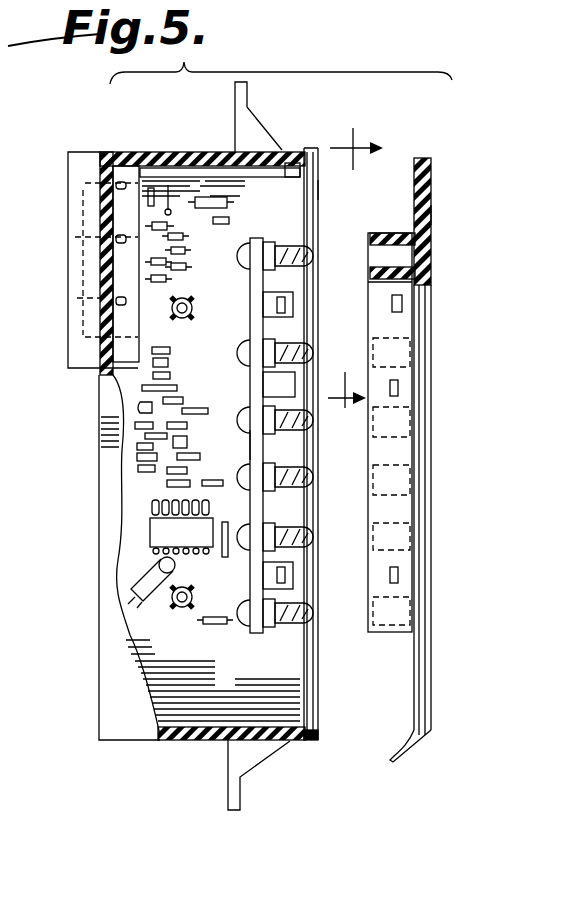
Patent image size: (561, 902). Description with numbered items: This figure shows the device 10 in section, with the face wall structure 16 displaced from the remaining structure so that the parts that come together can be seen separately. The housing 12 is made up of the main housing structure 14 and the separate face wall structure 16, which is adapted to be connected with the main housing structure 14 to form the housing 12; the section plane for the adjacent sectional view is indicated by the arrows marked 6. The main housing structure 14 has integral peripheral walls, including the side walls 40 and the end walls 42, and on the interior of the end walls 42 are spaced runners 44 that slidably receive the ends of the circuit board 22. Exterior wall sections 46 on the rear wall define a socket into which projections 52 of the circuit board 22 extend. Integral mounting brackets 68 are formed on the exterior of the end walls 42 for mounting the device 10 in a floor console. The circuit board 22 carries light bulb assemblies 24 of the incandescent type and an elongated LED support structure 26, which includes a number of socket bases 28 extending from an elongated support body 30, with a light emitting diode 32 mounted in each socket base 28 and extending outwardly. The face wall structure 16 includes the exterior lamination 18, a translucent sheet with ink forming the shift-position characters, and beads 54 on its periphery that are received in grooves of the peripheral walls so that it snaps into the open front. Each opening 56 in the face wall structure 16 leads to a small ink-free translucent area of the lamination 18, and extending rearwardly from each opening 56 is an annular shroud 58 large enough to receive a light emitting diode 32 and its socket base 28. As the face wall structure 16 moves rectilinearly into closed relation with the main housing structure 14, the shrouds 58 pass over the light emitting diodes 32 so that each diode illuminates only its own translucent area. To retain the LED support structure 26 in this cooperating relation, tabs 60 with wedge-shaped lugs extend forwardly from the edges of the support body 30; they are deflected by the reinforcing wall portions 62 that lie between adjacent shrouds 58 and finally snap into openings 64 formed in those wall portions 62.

The section line 6- 6 is at (355, 277).
The device 10 is at (362, 106).
The housing 12 is at (155, 754).
The main housing structure 14 is at (183, 151).
The face wall structure 16 is at (444, 164).
The exterior lamination 18 is at (318, 192).
The circuit board 22 is at (322, 692).
The light bulb assembly 24 is at (220, 286).
The LED support structure 26 is at (273, 238).
The socket base 28 is at (270, 346).
The support body 30 is at (250, 446).
The light emitting diode 32 is at (303, 263).
The side wall 40 is at (117, 683).
The end wall 42 is at (211, 742).
The runner 44 is at (245, 170).
The exterior wall section 46 is at (68, 214).
The projection 52 is at (67, 290).
The bead 54 is at (393, 761).
The opening 56 is at (418, 253).
The shroud 58 is at (422, 282).
The tab 60 is at (275, 305).
The reinforcing wall portion 62 is at (412, 352).
The opening 64 is at (390, 300).
The mounting bracket 68 is at (235, 107).